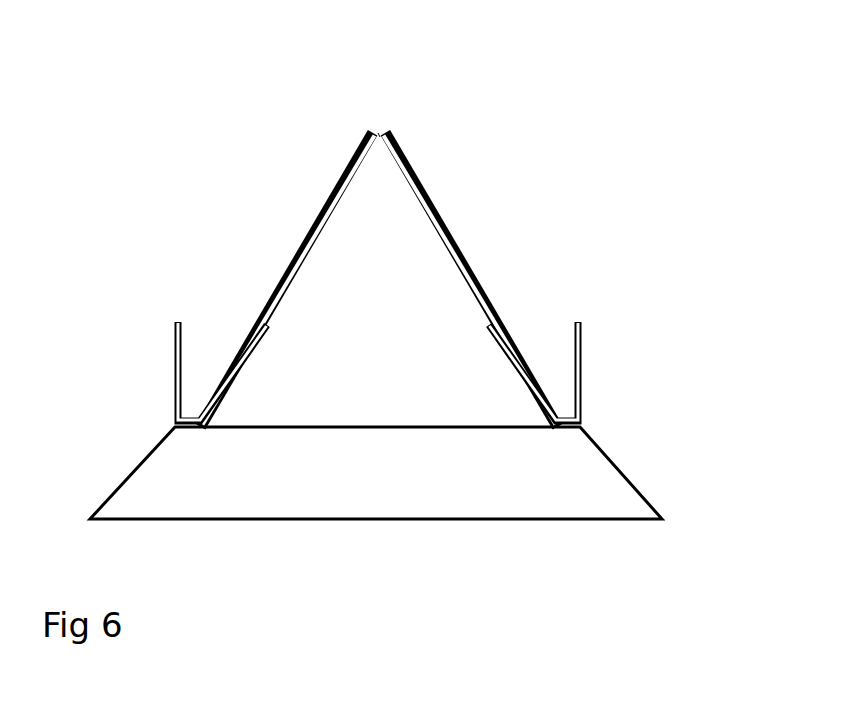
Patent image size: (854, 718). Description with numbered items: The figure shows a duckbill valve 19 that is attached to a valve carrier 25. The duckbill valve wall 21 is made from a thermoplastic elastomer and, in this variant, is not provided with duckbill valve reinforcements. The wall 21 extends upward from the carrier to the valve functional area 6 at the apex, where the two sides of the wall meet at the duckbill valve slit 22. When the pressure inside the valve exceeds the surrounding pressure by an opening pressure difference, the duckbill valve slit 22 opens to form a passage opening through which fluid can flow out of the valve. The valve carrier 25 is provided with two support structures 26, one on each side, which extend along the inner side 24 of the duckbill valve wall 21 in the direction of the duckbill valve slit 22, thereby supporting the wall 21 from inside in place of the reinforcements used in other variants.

The duckbill valve 19 is at (557, 147).
The valve carrier 25 is at (588, 465).
The duckbill valve wall 21 is at (277, 293).
The duckbill valve slit 22 is at (371, 134).
The inner side 24 is at (307, 222).
The valve functional area 6 is at (384, 128).
The support structures 26 is at (233, 381).